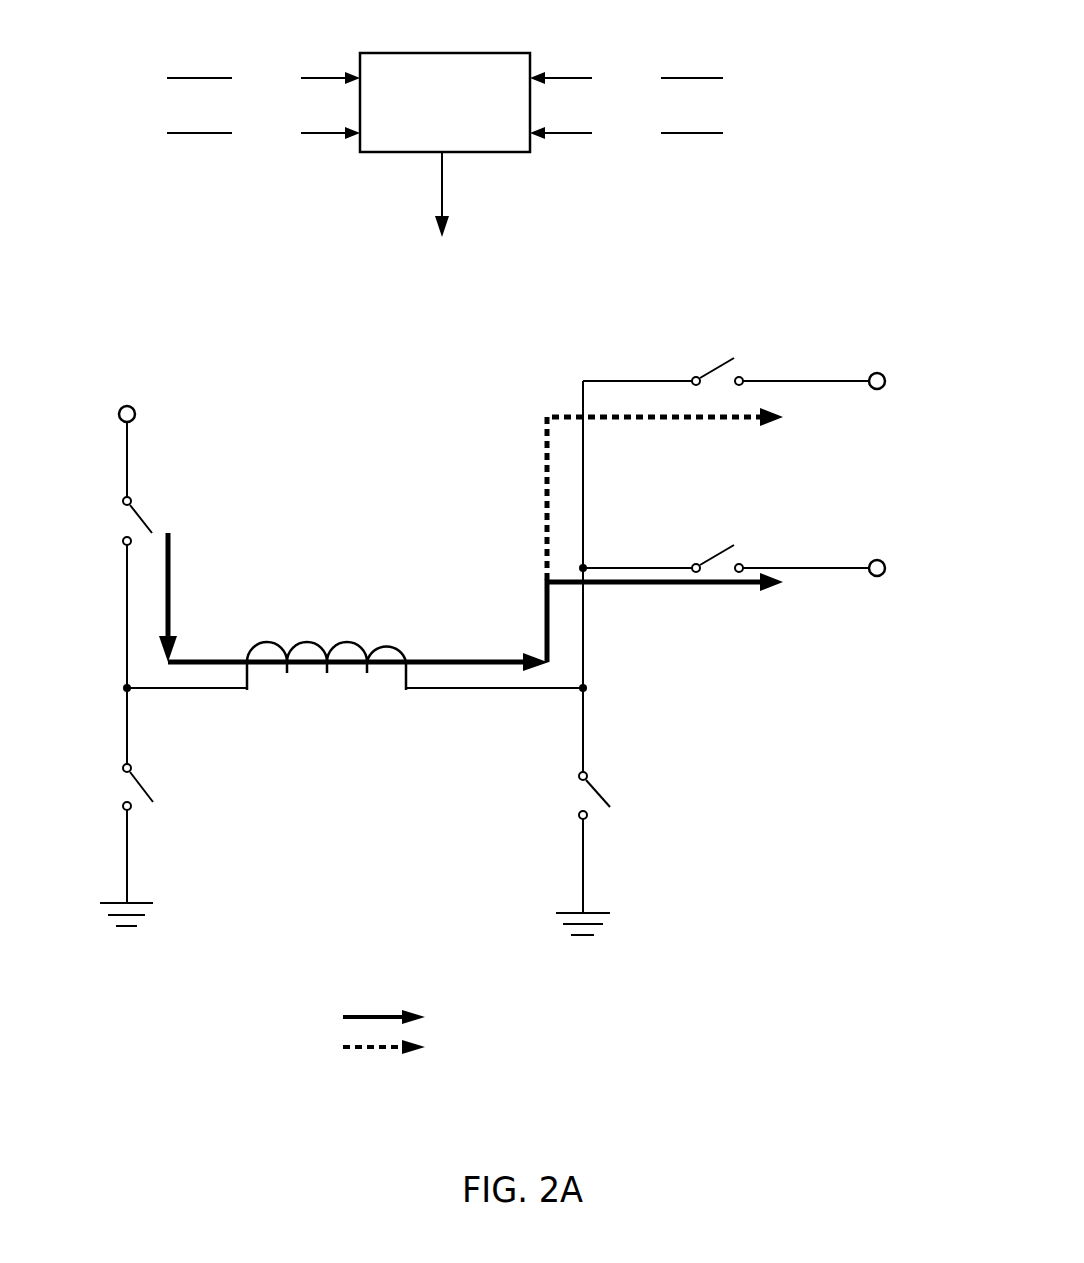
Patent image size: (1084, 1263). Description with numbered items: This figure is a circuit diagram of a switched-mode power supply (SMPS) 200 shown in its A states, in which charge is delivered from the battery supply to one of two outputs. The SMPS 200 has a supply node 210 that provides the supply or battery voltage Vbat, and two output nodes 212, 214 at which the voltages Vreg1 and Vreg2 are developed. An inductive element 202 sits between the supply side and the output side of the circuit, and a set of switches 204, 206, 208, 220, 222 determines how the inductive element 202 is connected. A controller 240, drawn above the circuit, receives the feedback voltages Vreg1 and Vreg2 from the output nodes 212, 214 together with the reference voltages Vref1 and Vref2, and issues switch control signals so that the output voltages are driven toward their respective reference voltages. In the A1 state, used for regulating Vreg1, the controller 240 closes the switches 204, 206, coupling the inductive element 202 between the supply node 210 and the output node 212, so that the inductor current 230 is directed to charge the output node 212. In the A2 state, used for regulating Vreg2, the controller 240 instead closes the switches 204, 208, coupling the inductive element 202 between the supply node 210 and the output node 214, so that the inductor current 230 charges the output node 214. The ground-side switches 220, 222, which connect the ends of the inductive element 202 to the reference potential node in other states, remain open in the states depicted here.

The switched-mode power supply (SMPS) 200 is at (140, 246).
The inductive element 202 is at (310, 645).
The switch 204 is at (144, 520).
The switch 206 is at (720, 367).
The switch 208 is at (720, 554).
The supply node 210 is at (119, 414).
The output node 212 is at (879, 372).
The output node 214 is at (879, 559).
The switch 220 is at (145, 789).
The switch 222 is at (598, 792).
The inductor current 230 is at (450, 660).
The controller 240 is at (480, 53).